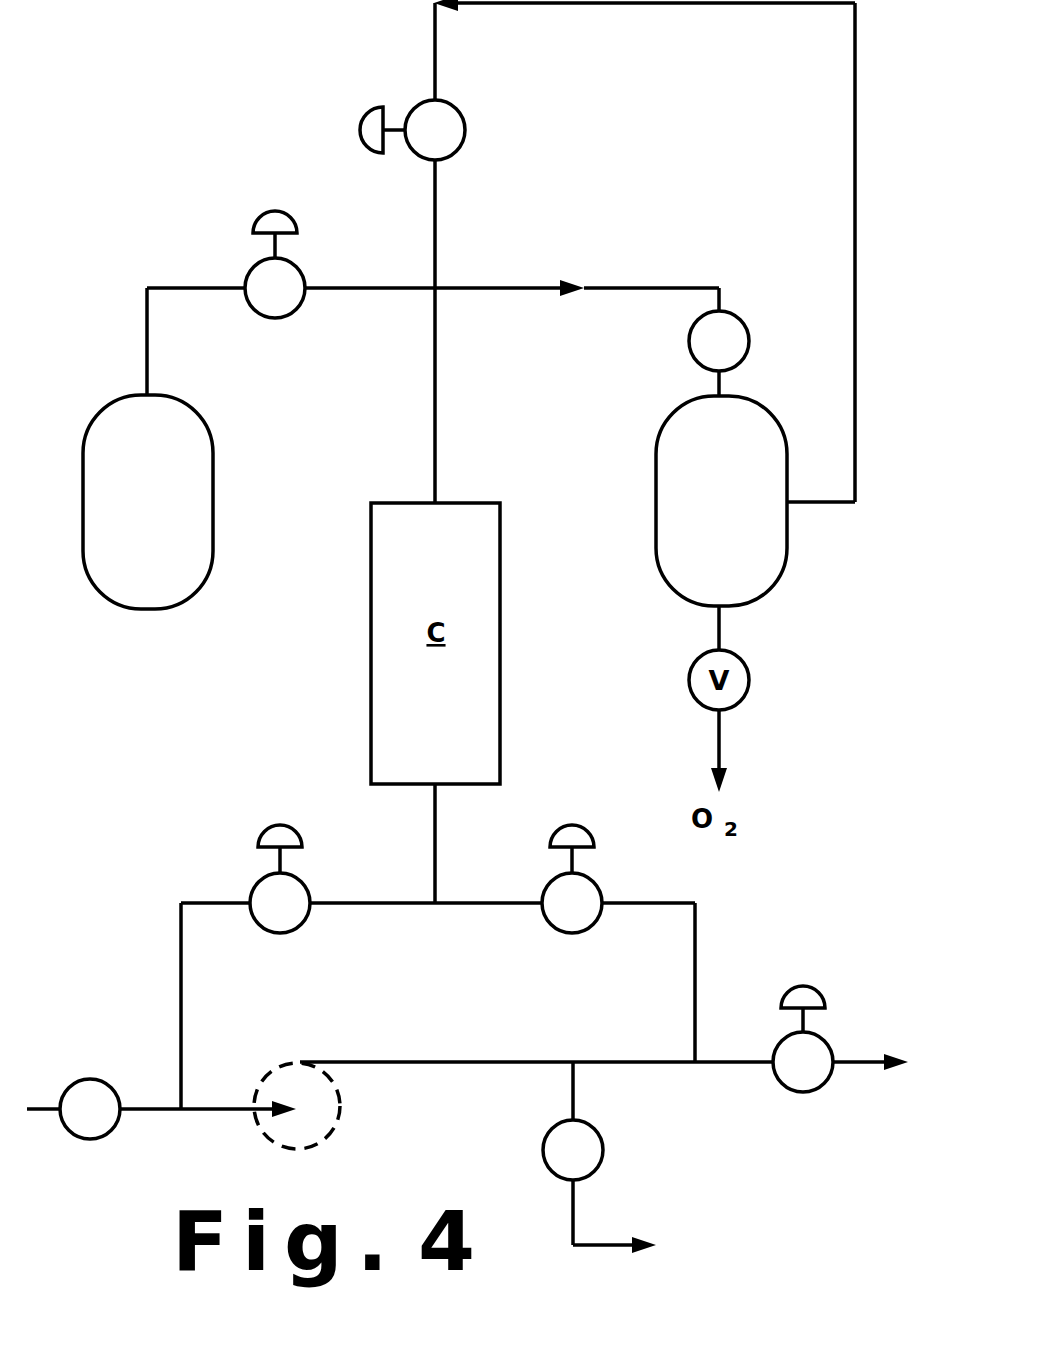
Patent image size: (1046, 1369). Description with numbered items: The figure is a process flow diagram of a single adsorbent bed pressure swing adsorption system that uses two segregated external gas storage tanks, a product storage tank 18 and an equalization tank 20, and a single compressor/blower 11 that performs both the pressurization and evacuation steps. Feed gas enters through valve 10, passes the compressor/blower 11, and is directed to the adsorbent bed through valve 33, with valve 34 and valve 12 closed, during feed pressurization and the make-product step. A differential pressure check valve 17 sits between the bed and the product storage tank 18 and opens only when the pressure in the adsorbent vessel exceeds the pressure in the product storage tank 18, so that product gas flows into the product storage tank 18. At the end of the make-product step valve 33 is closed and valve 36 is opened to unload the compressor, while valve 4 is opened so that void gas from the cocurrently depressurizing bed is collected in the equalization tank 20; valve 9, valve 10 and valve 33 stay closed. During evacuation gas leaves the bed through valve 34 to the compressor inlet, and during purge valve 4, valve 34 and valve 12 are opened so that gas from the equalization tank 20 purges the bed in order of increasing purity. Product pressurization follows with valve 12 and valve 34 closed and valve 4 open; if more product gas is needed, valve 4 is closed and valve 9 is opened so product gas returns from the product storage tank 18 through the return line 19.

The valve 4 is at (275, 318).
The valve 9 is at (456, 118).
The valve 10 is at (104, 1082).
The compressor/blower 11 is at (316, 1124).
The valve 12 is at (596, 1170).
The differential pressure check valve 17 is at (692, 358).
The product storage tank 18 is at (721, 501).
The return line 19 is at (855, 230).
The equalization tank 20 is at (148, 502).
The valve 33 is at (571, 932).
The valve 34 is at (263, 932).
The valve 36 is at (788, 1092).